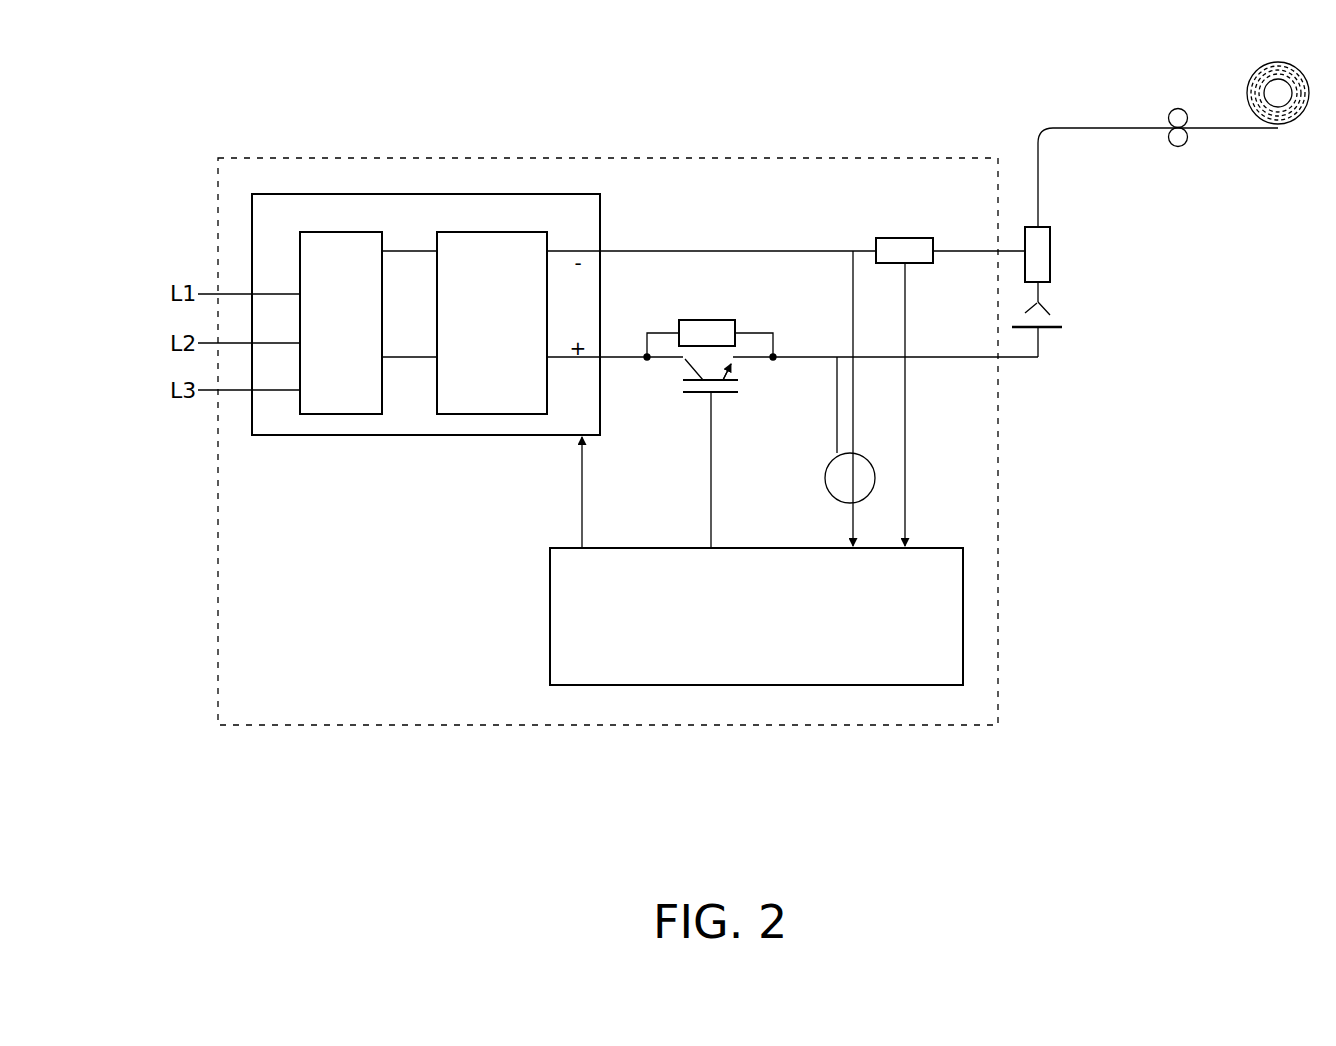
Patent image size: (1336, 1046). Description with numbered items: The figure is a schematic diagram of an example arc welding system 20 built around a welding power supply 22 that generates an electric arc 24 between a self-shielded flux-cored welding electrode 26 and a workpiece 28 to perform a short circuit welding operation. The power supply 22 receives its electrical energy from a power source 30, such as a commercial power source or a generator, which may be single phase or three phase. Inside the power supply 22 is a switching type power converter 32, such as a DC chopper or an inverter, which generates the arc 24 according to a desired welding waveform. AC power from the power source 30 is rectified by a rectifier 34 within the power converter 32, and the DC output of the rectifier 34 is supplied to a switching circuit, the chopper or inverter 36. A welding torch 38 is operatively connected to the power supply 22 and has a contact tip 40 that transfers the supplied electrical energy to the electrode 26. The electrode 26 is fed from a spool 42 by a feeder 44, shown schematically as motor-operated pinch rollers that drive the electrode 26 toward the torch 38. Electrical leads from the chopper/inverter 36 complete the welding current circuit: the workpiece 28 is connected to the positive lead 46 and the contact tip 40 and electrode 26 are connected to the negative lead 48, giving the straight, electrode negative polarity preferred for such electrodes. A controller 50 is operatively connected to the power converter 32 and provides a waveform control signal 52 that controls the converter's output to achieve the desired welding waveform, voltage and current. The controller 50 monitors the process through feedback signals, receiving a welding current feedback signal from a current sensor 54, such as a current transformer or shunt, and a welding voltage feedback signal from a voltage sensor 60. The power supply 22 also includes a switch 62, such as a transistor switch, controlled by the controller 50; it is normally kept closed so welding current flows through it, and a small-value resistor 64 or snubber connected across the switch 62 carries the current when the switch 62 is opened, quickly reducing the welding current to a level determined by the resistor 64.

The arc welding system 20 is at (405, 104).
The welding power supply 22 is at (618, 158).
The electric arc 24 is at (1054, 305).
The self-shielded flux-cored welding electrode 26 is at (1038, 203).
The workpiece 28 is at (1050, 327).
The power source 30 is at (144, 460).
The switching type power converter 32 is at (430, 194).
The rectifier 34 is at (338, 414).
The chopper or inverter 36 is at (507, 230).
The welding torch 38 is at (1068, 231).
The contact tip 40 is at (1050, 263).
The spool 42 is at (1280, 130).
The feeder 44 is at (1175, 147).
The positive lead 46 is at (792, 357).
The negative lead 48 is at (763, 251).
The controller 50 is at (550, 615).
The waveform control signal 52 is at (582, 517).
The current sensor 54 is at (902, 238).
The voltage sensor 60 is at (825, 477).
The switch 62 is at (743, 380).
The resistor 64 is at (710, 320).